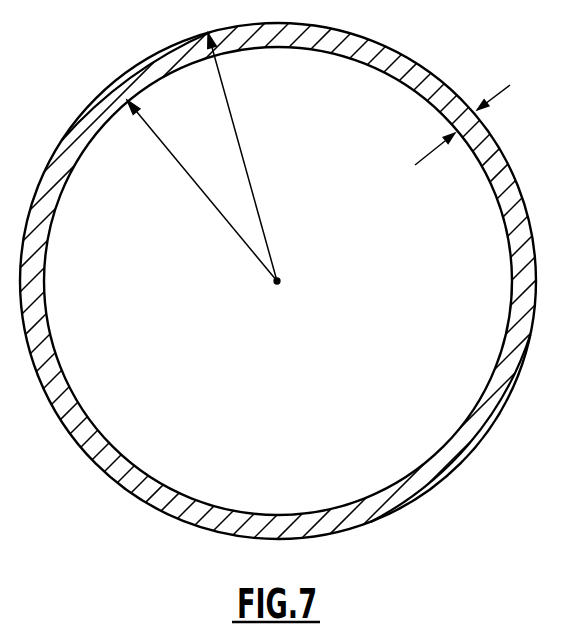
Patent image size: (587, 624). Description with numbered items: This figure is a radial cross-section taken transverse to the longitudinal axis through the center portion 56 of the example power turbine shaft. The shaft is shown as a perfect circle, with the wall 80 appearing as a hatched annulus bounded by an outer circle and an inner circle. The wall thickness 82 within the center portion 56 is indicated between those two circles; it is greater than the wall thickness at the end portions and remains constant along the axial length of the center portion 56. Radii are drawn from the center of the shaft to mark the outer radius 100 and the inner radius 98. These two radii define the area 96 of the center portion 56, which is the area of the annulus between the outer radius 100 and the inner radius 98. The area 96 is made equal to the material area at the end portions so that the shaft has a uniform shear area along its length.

The center portion 56 is at (288, 313).
The wall 80 is at (347, 334).
The wall thickness 82 is at (508, 87).
The area 96 is at (394, 60).
The inner radius 98 is at (201, 190).
The outer radius 100 is at (241, 153).